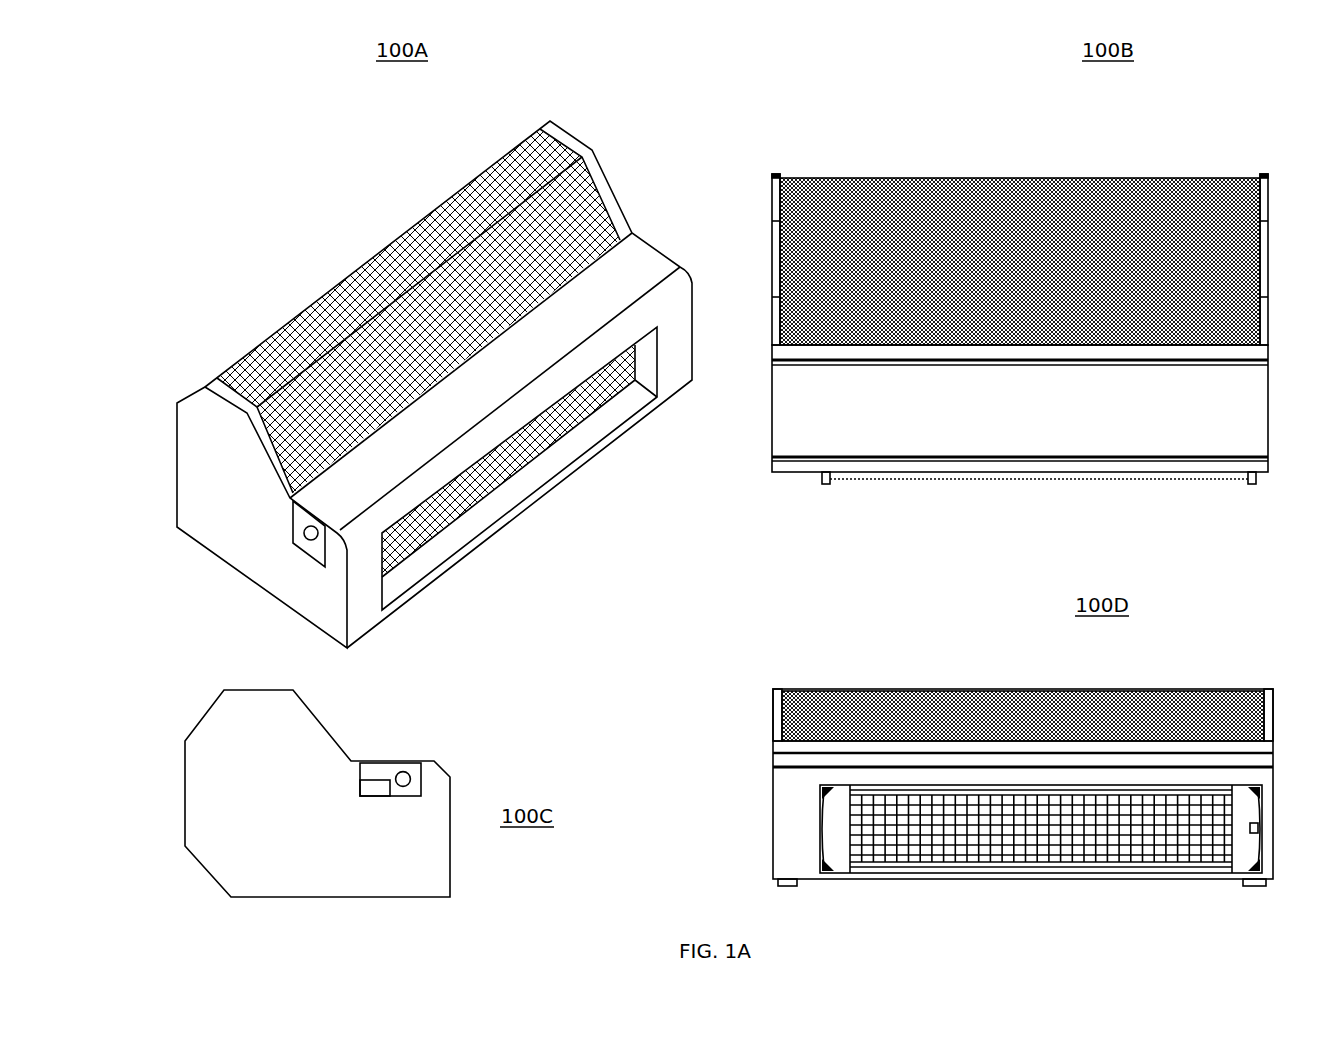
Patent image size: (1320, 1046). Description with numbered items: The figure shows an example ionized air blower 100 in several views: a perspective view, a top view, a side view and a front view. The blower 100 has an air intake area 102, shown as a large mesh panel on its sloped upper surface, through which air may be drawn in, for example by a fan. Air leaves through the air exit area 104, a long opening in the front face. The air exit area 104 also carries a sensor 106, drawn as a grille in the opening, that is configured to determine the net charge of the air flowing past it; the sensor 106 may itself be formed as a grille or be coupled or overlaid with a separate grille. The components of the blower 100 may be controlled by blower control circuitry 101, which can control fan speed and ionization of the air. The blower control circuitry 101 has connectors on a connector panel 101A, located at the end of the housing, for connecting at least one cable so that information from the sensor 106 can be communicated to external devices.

The ionized air blower 100 is at (720, 503).
The blower control circuitry 101 is at (290, 521).
The connector panel 101A is at (368, 775).
The air intake area 102 is at (330, 258).
The air exit area 104 is at (538, 474).
The sensor 106 is at (415, 532).